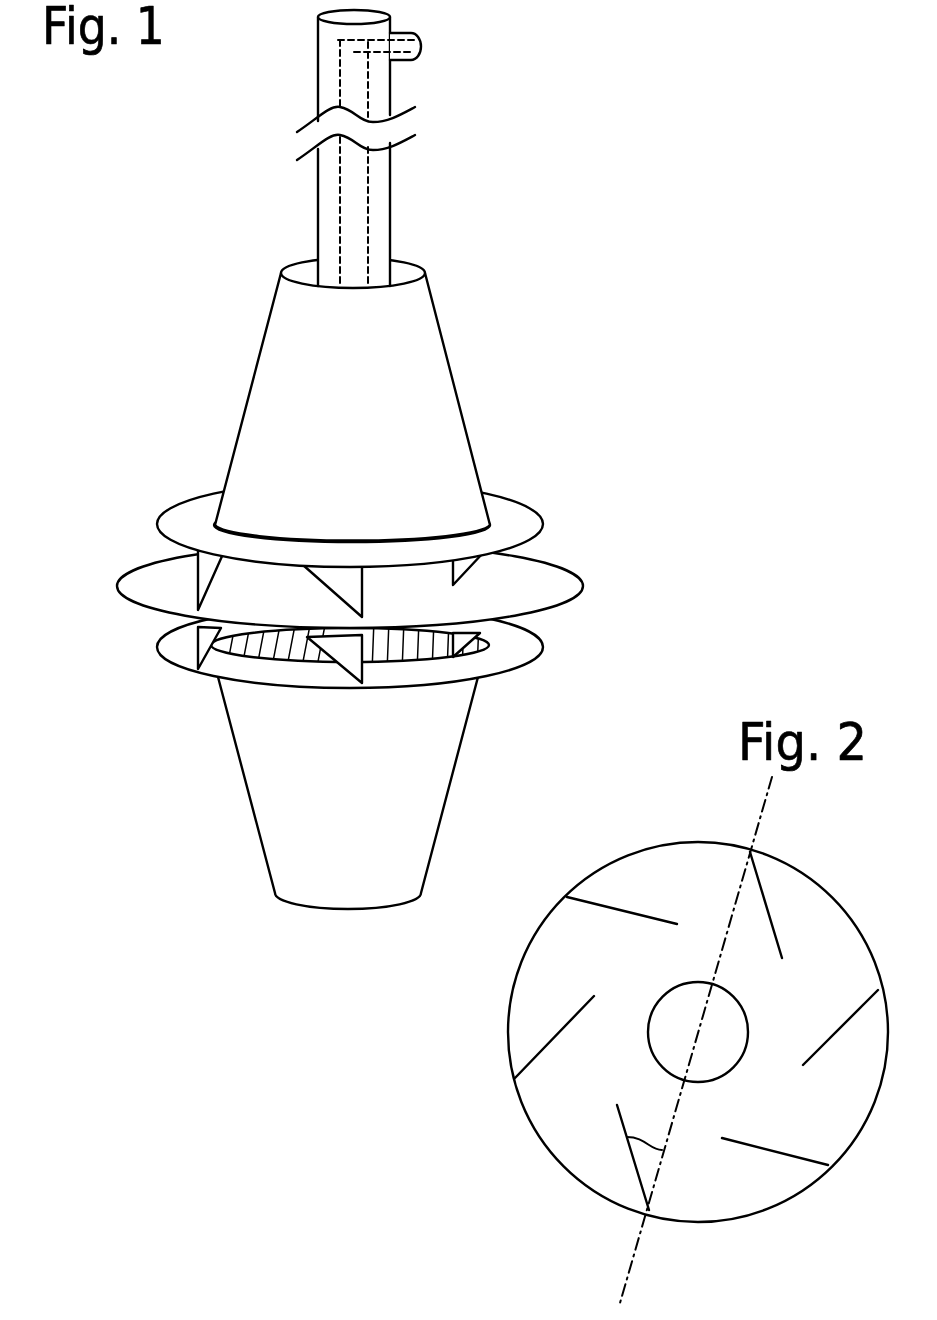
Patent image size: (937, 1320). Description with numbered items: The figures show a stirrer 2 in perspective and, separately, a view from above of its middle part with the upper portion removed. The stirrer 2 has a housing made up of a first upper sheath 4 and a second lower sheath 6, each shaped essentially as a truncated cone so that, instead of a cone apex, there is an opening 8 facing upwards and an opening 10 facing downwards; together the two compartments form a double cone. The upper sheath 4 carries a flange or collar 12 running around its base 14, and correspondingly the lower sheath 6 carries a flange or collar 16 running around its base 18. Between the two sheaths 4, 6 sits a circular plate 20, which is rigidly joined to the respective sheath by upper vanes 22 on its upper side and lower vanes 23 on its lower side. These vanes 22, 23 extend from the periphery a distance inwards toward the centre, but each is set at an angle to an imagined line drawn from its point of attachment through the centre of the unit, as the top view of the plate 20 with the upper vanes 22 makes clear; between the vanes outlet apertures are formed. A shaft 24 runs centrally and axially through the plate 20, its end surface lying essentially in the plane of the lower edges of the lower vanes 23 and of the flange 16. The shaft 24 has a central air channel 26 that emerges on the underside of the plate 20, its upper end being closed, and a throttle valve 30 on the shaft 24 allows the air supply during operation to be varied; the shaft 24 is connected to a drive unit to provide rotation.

In FIG. 1, the stirrer 2 is at (493, 350).
In FIG. 1, the first upper sheath 4 is at (433, 458).
In FIG. 1, the second lower sheath 6 is at (402, 762).
In FIG. 1, the upper opening 8 is at (403, 270).
In FIG. 1, the lower opening 10 is at (323, 930).
In FIG. 1, the flange or collar 12 is at (512, 510).
In FIG. 1, the base of the upper sheath 14 is at (218, 490).
In FIG. 1, the flange or collar 16 is at (258, 668).
In FIG. 1, the base of the lower sheath 18 is at (483, 640).
In FIG. 1, the circular plate 20 is at (555, 575).
In FIG. 2, the circular plate 20 is at (528, 1022).
In FIG. 1, the upper vanes 22 is at (207, 563).
In FIG. 2, the upper vanes 22 is at (770, 903).
In FIG. 1, the lower vanes 23 is at (197, 653).
In FIG. 1, the shaft 24 is at (380, 177).
In FIG. 1, the central air channel 26 is at (352, 203).
In FIG. 1, the throttle valve 30 is at (413, 62).